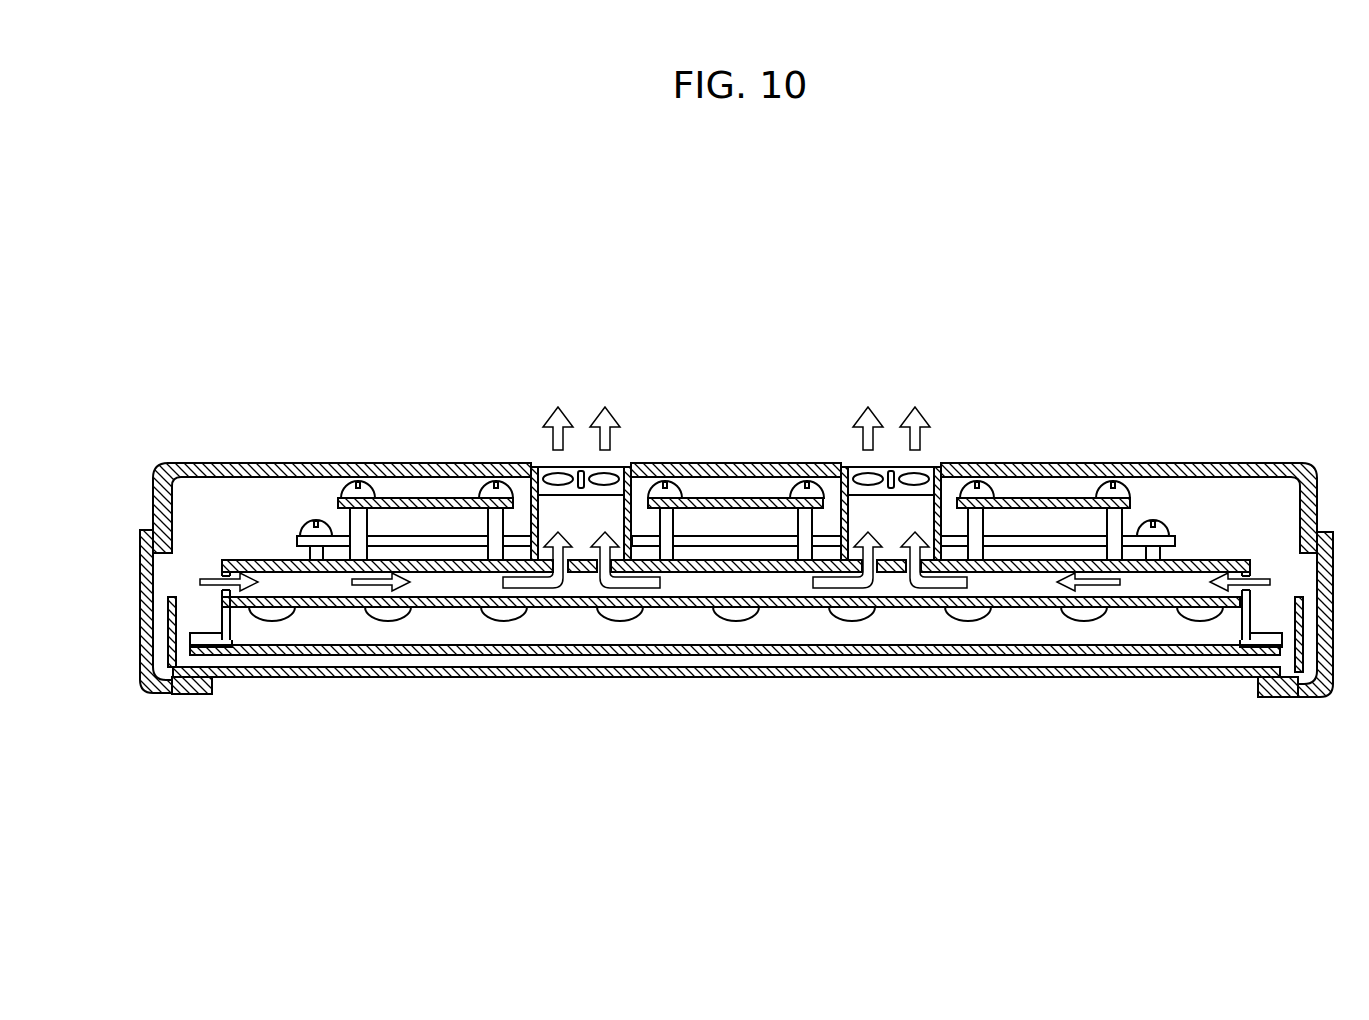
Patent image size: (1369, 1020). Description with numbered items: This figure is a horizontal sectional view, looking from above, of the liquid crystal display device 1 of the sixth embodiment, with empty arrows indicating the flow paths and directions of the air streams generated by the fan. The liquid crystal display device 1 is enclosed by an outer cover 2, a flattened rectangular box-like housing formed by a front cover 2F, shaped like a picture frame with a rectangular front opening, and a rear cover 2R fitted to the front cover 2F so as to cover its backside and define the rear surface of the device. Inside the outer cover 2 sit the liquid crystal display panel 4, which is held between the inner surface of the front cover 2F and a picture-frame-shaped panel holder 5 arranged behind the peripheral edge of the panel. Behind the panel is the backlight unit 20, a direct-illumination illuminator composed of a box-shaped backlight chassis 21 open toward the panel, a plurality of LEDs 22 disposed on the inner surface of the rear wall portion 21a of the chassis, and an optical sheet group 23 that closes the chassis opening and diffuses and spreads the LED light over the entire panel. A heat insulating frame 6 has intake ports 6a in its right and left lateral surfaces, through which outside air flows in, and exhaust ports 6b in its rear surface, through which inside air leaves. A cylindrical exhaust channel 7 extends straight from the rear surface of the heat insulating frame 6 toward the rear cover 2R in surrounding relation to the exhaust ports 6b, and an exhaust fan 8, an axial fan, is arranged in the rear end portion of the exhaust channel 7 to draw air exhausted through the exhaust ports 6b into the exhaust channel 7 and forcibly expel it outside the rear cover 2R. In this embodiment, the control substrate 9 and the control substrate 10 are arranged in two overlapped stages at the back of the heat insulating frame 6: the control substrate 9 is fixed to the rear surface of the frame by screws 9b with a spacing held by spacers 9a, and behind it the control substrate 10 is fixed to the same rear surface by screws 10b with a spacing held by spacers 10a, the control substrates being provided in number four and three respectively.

The liquid crystal display device 1 is at (325, 220).
The outer cover 2 is at (195, 360).
The front cover 2F is at (140, 532).
The rear cover 2R is at (172, 463).
The liquid crystal display panel 4 is at (665, 678).
The panel holder 5 is at (176, 680).
The heat insulating frame 6 is at (1147, 573).
The intake ports 6a is at (222, 570).
The exhaust ports 6b is at (566, 578).
The exhaust channel 7 is at (568, 525).
The exhaust fan 8 is at (580, 472).
The control substrate 9 is at (300, 542).
The spacers 9a is at (305, 555).
The screws 9b is at (309, 521).
The control substrate 10 is at (437, 500).
The spacers 10a is at (368, 515).
The screws 10b is at (343, 486).
The backlight unit 20 is at (792, 662).
The backlight chassis 21 is at (452, 612).
The rear wall portion 21a is at (738, 572).
The LEDs 22 is at (272, 620).
The optical sheet group 23 is at (730, 657).